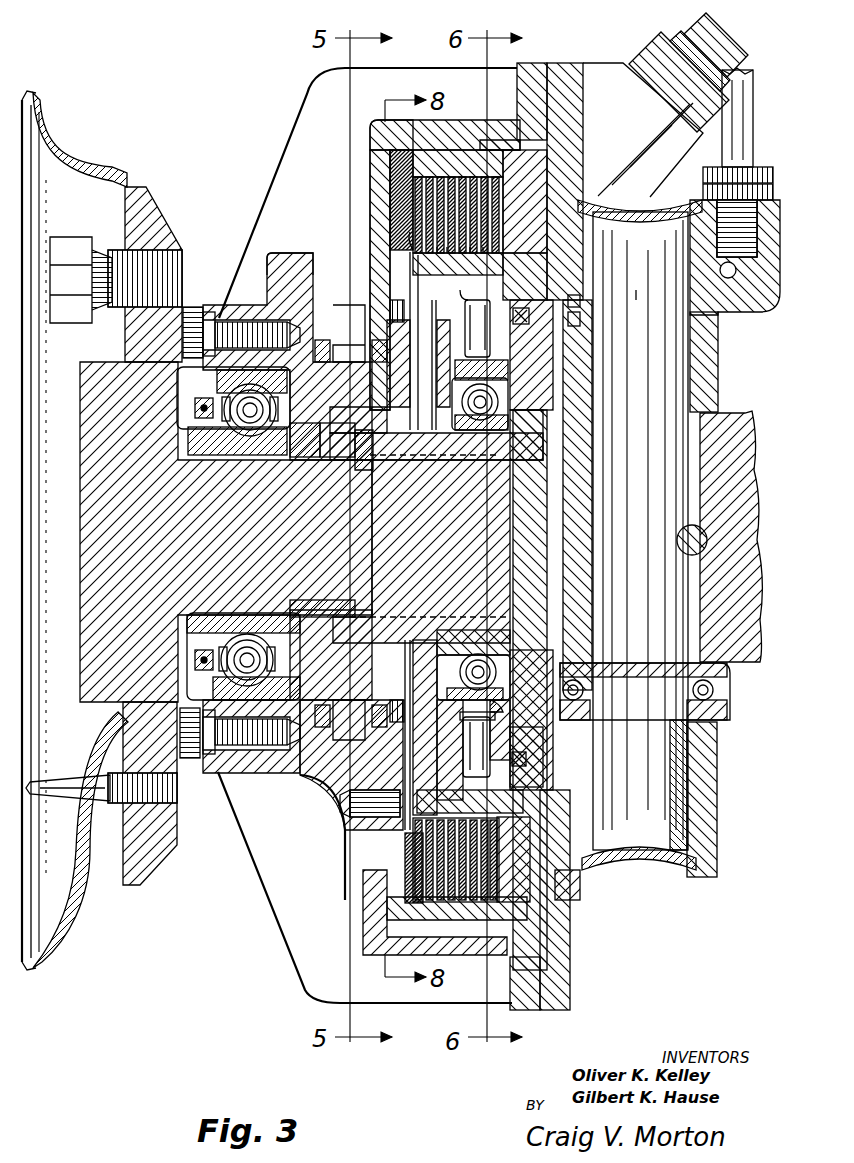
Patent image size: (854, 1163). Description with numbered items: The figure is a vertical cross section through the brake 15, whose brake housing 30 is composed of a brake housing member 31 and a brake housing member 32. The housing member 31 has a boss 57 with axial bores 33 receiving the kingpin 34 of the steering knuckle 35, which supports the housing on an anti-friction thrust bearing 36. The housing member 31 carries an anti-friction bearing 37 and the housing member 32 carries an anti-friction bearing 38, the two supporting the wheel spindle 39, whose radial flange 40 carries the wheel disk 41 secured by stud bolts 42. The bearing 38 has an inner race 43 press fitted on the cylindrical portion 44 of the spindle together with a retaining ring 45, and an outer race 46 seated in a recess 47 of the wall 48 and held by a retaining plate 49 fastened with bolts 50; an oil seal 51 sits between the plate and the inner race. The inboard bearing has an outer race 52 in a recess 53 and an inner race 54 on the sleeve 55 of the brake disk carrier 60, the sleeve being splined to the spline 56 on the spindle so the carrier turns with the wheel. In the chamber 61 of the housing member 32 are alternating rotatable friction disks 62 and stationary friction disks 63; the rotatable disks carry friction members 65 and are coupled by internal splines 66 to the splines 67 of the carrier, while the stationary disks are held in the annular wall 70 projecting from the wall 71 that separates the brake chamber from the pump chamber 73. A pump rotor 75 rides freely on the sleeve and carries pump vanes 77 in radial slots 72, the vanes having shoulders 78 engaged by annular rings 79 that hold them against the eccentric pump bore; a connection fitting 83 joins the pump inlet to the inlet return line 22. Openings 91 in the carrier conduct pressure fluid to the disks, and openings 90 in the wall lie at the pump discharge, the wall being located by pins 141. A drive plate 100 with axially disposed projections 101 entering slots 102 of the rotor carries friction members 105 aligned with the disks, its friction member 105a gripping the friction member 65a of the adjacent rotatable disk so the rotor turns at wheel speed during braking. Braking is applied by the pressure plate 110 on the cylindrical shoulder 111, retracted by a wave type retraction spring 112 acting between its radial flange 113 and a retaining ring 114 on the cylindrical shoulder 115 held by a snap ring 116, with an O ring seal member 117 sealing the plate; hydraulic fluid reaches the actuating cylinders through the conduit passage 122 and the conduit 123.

The brake 15 is at (283, 152).
The inlet return line 22 is at (735, 40).
The brake housing 30 is at (370, 146).
The brake housing member 31 is at (556, 63).
The brake housing member 32 is at (375, 148).
The axial bores 33 is at (690, 268).
The kingpin 34 is at (638, 295).
The steering knuckle 35 is at (735, 445).
The anti-friction thrust bearing 36 is at (730, 712).
The anti-friction bearing 37 is at (576, 392).
The anti-friction bearing 38 is at (240, 457).
The wheel spindle 39 is at (95, 600).
The radial flange 40 is at (160, 205).
The wheel disk 41 is at (80, 162).
The stud bolts 42 is at (68, 242).
The inner race 43 is at (195, 437).
The cylindrical portion 44 is at (243, 632).
The retaining ring 45 is at (320, 612).
The outer race 46 is at (200, 390).
The recess 47 is at (205, 378).
The wall 48 is at (230, 320).
The retaining plate 49 is at (212, 322).
The bolts 50 is at (192, 308).
The oil seal 51 is at (195, 410).
The outer race 52 is at (515, 385).
The recess 53 is at (500, 365).
The inner race 54 is at (512, 398).
The sleeve 55 is at (500, 445).
The spline 56 is at (357, 465).
The boss 57 is at (720, 382).
The brake disk carrier 60 is at (572, 275).
The chamber 61 is at (490, 140).
The rotatable friction disks 62 is at (430, 178).
The stationary friction disks 63 is at (462, 178).
The friction member 65 is at (457, 178).
The friction member 65a is at (423, 903).
The internal splines 66 is at (572, 880).
The splines 67 is at (520, 258).
The annular wall 70 is at (515, 160).
The wall 71 is at (348, 280).
The radial slots 72 is at (333, 437).
The pump chamber 73 is at (325, 272).
The pump rotor 75 is at (298, 432).
The pump vane 77 is at (343, 283).
The shoulders 78 is at (340, 345).
The annular rings 79 is at (322, 340).
The connection fitting 83 is at (640, 62).
The openings 90 is at (392, 310).
The openings 91 is at (466, 280).
The drive plate 100 is at (410, 248).
The axially disposed projections 101 is at (392, 462).
The slots 102 is at (414, 458).
The friction members 105 is at (398, 175).
The friction member 105a is at (408, 855).
The pressure plate 110 is at (565, 190).
The cylindrical shoulder 111 is at (580, 318).
The retraction spring 112 is at (580, 300).
The radial flange 113 is at (500, 330).
The retaining ring 114 is at (490, 740).
The cylindrical shoulder 115 is at (490, 710).
The snap ring 116 is at (495, 725).
The O ring seal member 117 is at (524, 760).
The conduit passage 122 is at (735, 310).
The conduit 123 is at (752, 97).
The pins 141 is at (352, 803).